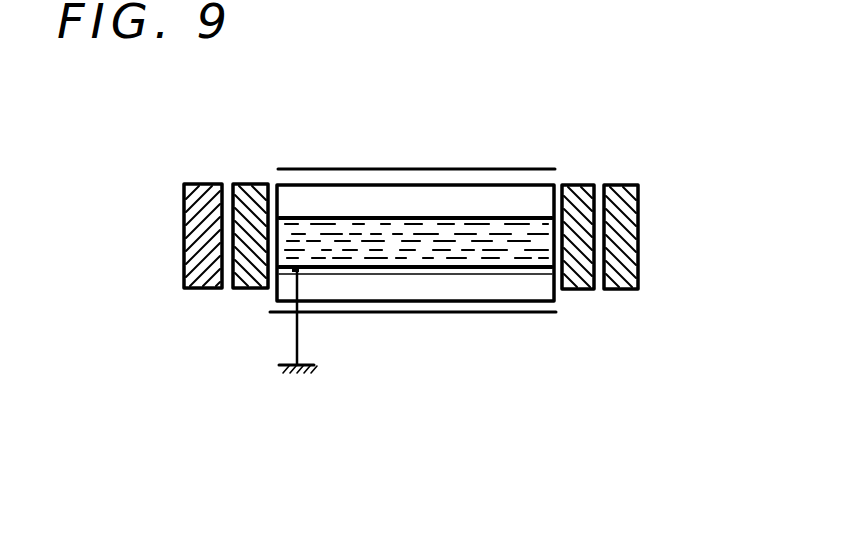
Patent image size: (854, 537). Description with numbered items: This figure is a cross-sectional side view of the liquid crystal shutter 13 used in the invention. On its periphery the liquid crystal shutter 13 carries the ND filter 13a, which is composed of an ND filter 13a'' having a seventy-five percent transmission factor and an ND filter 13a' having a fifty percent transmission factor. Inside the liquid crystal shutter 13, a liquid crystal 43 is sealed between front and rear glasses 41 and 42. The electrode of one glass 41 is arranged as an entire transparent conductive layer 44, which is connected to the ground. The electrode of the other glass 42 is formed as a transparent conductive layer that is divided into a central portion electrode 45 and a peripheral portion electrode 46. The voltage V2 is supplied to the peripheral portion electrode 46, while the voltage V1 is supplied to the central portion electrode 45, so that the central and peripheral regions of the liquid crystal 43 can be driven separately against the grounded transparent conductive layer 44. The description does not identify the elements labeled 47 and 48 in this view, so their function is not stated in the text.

The liquid crystal shutter 13 is at (381, 152).
The ND filter 13a is at (455, 308).
The ND filter 13a' is at (464, 294).
The ND filter 13a'' is at (427, 285).
The glass 41 is at (430, 290).
The glass 42 is at (428, 200).
The liquid crystal 43 is at (350, 250).
The transparent conductive layer 44 is at (530, 268).
The central portion electrode 45 is at (490, 218).
The peripheral portion electrode 46 is at (554, 186).
The upper plate 47 is at (549, 196).
The lower plate 48 is at (522, 313).
The voltage V1 is at (342, 218).
The voltage V2 is at (295, 218).